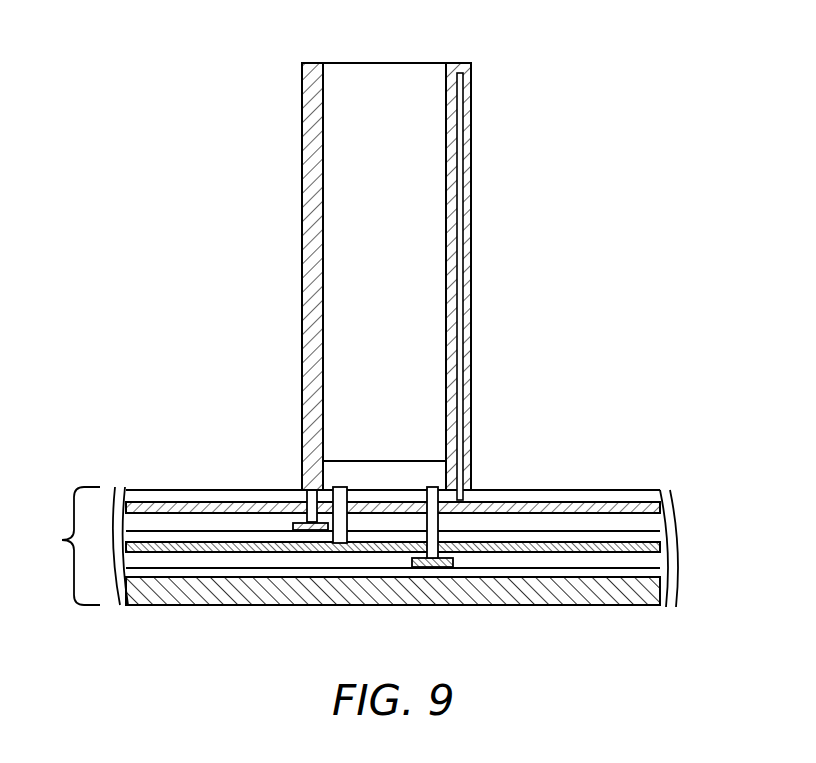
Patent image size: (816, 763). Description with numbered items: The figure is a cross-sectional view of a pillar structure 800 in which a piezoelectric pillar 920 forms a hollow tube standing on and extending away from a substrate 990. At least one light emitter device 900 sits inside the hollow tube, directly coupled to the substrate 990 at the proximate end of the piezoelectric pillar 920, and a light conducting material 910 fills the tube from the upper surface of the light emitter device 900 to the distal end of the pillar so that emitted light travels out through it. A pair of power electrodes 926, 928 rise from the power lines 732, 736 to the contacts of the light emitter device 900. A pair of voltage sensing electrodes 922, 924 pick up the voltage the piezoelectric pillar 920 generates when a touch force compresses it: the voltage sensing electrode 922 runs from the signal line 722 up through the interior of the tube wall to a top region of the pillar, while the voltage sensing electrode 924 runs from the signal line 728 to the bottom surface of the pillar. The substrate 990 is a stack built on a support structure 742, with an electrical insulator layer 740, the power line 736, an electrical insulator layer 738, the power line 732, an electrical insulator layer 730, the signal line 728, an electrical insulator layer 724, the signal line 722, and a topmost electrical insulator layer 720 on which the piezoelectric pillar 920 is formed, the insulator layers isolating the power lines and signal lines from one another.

The pillar structure 800 is at (548, 62).
The light emitter device 900 is at (407, 481).
The light conducting material 910 is at (403, 85).
The piezoelectric pillar 920 is at (315, 242).
The voltage sensing electrode 922 is at (458, 330).
The voltage sensing electrode 924 is at (307, 525).
The power electrode 926 is at (312, 510).
The power electrode 928 is at (433, 510).
The substrate 990 is at (348, 547).
The electrical insulator layer 720 is at (503, 497).
The signal line 722 is at (597, 503).
The electrical insulator layer 724 is at (640, 517).
The signal line 728 is at (300, 525).
The electrical insulator layer 730 is at (655, 537).
The power line 732 is at (650, 545).
The power line 736 is at (437, 562).
The electrical insulator layer 738 is at (638, 563).
The electrical insulator layer 740 is at (605, 573).
The support structure 742 is at (587, 587).